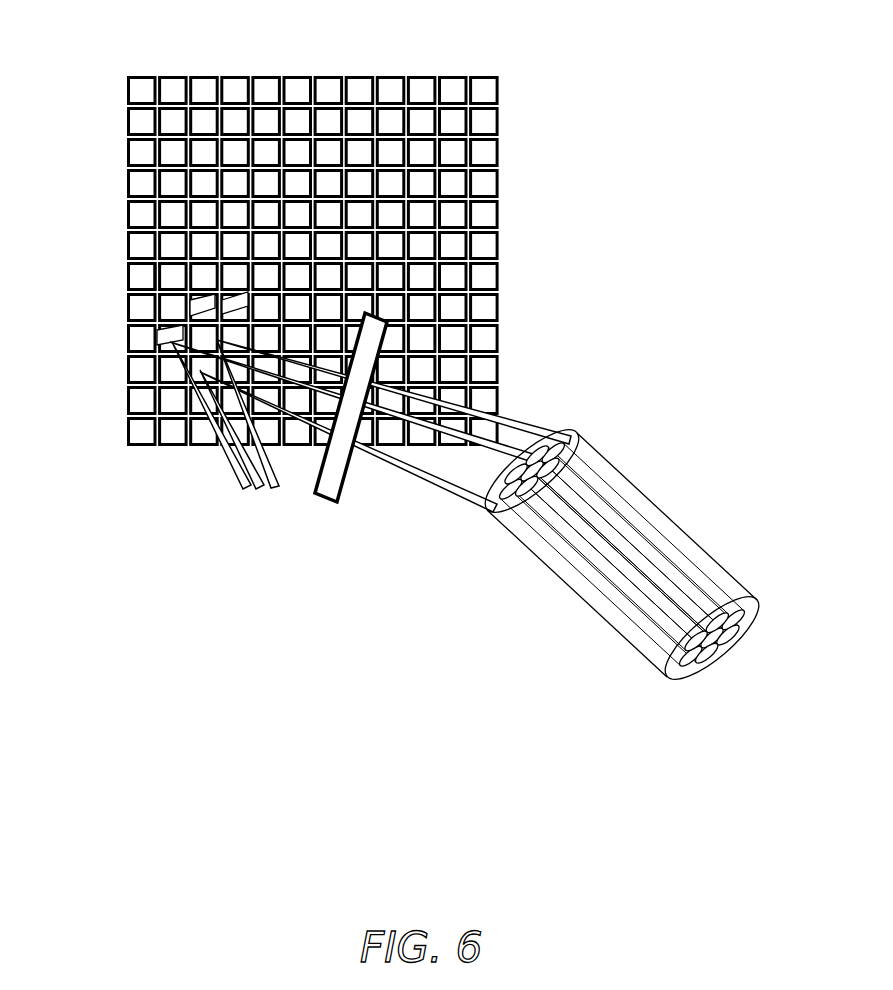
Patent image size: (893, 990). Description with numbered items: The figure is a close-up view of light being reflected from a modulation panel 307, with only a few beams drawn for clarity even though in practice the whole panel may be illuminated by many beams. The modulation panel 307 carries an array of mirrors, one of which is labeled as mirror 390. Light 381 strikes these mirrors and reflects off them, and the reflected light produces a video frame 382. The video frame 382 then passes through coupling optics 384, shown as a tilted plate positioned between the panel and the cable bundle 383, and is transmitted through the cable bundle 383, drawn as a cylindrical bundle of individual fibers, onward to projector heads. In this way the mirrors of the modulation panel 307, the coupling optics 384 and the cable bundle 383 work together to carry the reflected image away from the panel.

The modulation panel 307 is at (271, 236).
The mirror 390 is at (140, 285).
The light 381 is at (203, 481).
The video frame 382 is at (302, 432).
The cable bundle 383 is at (600, 470).
The coupling optics 384 is at (335, 485).